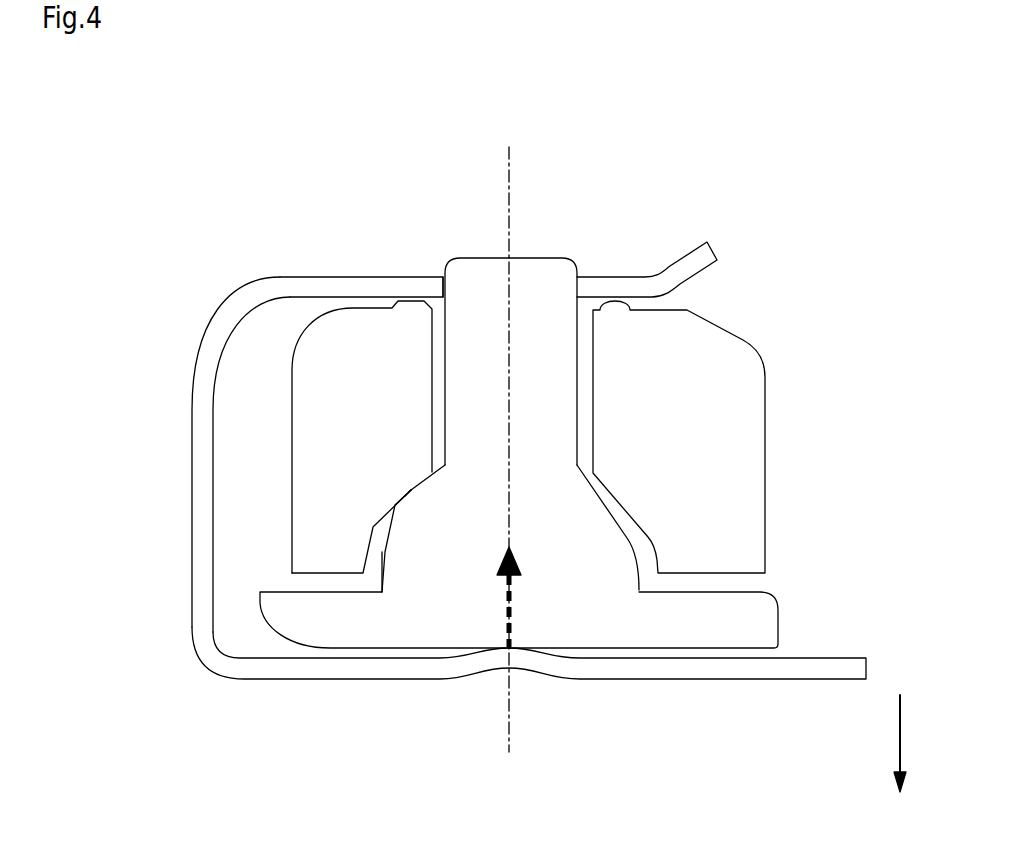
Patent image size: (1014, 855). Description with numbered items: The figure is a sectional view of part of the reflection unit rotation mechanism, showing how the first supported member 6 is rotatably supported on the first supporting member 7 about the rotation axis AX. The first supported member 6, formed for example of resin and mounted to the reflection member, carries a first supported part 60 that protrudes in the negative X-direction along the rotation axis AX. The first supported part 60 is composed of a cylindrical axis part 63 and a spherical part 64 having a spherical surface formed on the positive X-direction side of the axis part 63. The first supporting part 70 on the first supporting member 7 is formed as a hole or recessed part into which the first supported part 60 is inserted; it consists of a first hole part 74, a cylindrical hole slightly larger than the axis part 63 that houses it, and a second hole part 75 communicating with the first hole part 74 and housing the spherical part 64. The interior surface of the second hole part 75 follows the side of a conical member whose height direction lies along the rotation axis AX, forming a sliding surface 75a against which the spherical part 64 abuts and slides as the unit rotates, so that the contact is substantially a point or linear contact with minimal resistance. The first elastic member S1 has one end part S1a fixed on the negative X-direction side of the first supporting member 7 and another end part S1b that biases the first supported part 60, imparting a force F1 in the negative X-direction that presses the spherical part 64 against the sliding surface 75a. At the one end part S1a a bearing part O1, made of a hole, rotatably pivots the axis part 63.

The first elastic member S1 is at (519, 480).
The one end part of first elastic member S1a is at (352, 288).
The other end part of first elastic member S1b is at (357, 668).
The bearing part O1 is at (440, 280).
The first supporting member 7 is at (751, 337).
The first supported part 60 is at (643, 416).
The axis part 63 is at (545, 400).
The spherical part 64 is at (593, 527).
The first supported member 6 is at (784, 625).
The first supporting part 70 is at (279, 520).
The first hole part 74 is at (432, 410).
The second hole part 75 is at (380, 520).
The sliding surface 75a is at (411, 491).
The rotation axis AX is at (510, 434).
The force F1 is at (525, 597).
The X-direction X is at (889, 743).